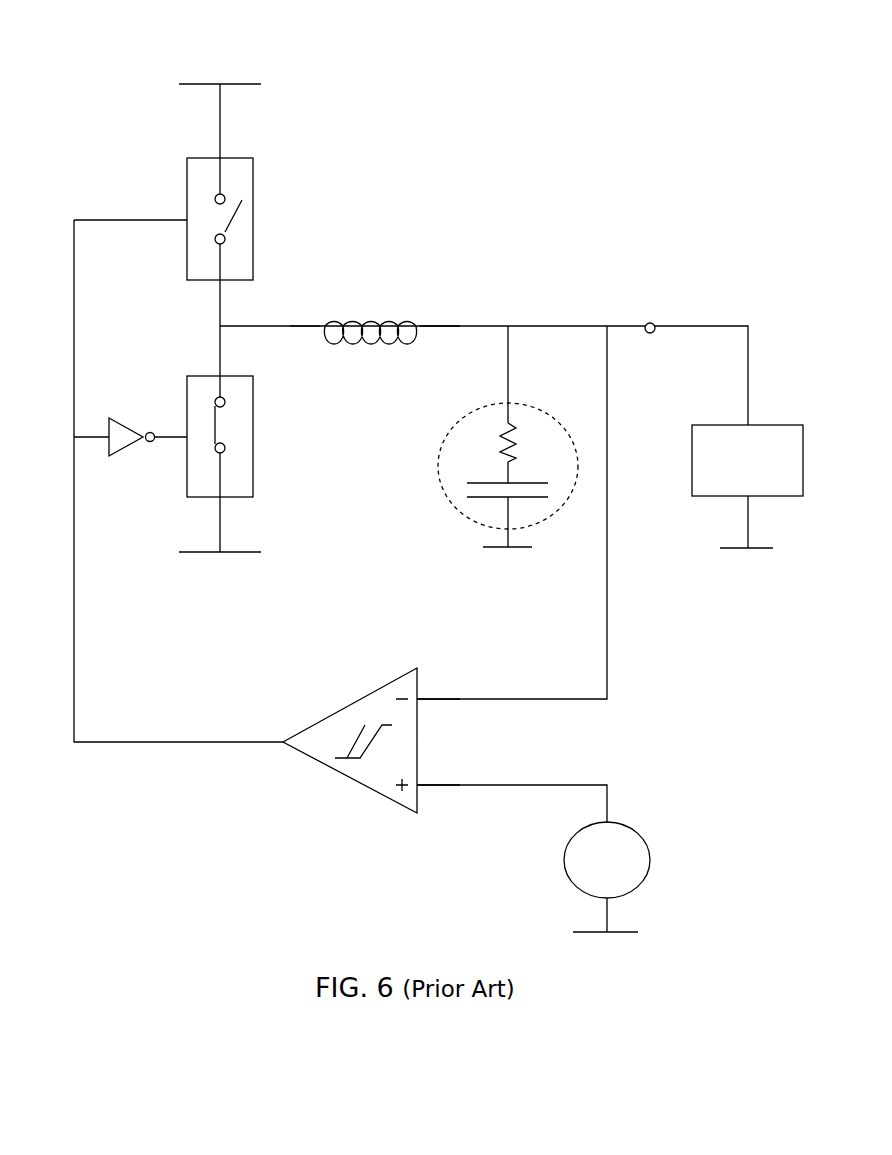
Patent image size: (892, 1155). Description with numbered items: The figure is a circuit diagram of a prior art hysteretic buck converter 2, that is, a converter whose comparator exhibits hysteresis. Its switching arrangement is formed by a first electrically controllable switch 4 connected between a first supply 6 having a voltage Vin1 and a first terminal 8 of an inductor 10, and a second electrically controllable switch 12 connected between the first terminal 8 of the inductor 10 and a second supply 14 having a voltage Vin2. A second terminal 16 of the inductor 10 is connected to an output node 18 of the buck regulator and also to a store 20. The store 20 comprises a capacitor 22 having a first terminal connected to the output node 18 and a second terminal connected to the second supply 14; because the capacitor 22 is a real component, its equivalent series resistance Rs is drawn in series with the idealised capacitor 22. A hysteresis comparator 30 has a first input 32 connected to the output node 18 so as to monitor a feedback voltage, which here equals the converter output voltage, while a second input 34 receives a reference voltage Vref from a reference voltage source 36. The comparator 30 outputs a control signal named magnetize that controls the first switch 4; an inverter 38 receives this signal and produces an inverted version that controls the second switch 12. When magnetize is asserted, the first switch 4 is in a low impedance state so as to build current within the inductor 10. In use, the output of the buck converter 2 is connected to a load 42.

The buck converter 2 is at (590, 182).
The first electrically controllable switch 4 is at (253, 180).
The first supply 6 is at (237, 84).
The first terminal of the inductor 8 is at (300, 328).
The inductor 10 is at (378, 320).
The second electrically controllable switch 12 is at (253, 437).
The second supply 14 is at (236, 553).
The second terminal of the inductor 16 is at (436, 328).
The output node 18 is at (654, 323).
The store 20 is at (468, 525).
The capacitor 22 is at (470, 488).
The hysteresis comparator 30 is at (350, 782).
The first input of the comparator 32 is at (420, 695).
The second input of the comparator 34 is at (420, 790).
The reference voltage source 36 is at (650, 858).
The inverter 38 is at (128, 453).
The load 42 is at (692, 462).